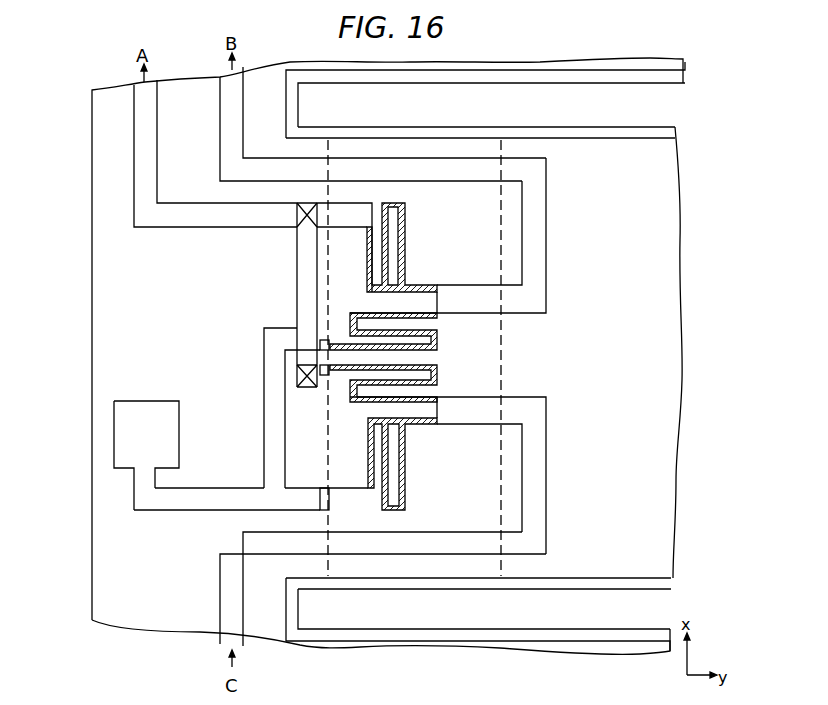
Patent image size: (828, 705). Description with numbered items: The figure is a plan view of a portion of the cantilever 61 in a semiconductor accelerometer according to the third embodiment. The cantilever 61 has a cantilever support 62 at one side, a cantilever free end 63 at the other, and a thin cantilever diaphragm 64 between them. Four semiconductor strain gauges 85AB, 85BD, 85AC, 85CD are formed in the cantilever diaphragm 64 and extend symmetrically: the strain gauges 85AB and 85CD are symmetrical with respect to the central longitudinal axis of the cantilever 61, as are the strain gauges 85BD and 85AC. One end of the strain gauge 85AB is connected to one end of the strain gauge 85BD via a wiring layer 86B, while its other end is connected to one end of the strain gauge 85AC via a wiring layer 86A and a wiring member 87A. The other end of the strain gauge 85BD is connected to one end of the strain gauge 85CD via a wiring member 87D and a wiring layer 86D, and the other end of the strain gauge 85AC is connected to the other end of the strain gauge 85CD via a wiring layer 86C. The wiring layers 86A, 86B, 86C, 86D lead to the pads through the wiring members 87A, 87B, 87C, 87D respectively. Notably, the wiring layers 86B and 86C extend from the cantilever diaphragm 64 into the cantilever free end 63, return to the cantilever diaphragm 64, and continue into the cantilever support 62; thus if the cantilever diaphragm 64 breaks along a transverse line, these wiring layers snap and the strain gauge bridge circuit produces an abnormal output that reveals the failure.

The cantilever 61 is at (645, 55).
The cantilever support 62 is at (108, 283).
The cantilever free end 63 is at (667, 411).
The cantilever diaphragm 64 is at (488, 242).
The semiconductor strain gauge 85AB is at (405, 242).
The semiconductor strain gauge 85BD is at (440, 338).
The semiconductor strain gauge 85AC is at (440, 369).
The semiconductor strain gauge 85CD is at (408, 454).
The wiring layer 86A is at (351, 218).
The wiring layer 86B is at (537, 298).
The wiring layer 86C is at (545, 468).
The wiring layer 86D is at (347, 498).
The wiring member 87A is at (228, 218).
The wiring member 87B is at (232, 136).
The wiring member 87C is at (230, 598).
The wiring member 87D is at (180, 500).